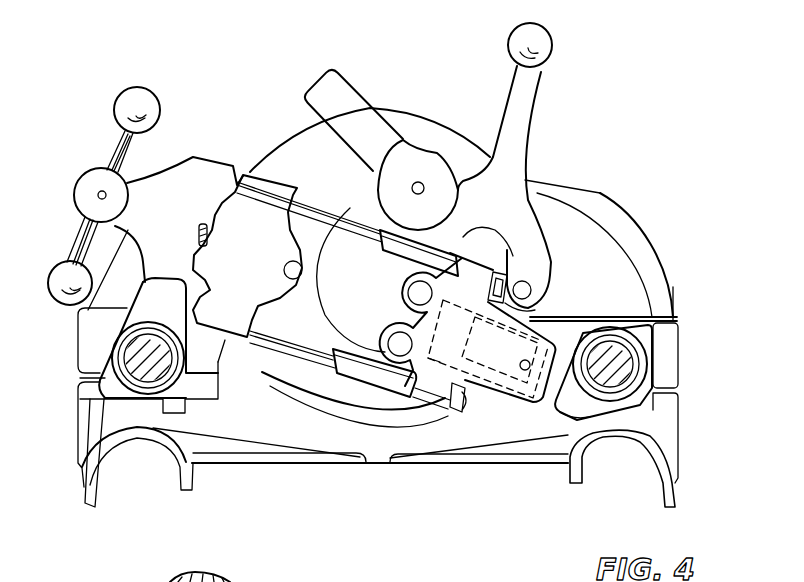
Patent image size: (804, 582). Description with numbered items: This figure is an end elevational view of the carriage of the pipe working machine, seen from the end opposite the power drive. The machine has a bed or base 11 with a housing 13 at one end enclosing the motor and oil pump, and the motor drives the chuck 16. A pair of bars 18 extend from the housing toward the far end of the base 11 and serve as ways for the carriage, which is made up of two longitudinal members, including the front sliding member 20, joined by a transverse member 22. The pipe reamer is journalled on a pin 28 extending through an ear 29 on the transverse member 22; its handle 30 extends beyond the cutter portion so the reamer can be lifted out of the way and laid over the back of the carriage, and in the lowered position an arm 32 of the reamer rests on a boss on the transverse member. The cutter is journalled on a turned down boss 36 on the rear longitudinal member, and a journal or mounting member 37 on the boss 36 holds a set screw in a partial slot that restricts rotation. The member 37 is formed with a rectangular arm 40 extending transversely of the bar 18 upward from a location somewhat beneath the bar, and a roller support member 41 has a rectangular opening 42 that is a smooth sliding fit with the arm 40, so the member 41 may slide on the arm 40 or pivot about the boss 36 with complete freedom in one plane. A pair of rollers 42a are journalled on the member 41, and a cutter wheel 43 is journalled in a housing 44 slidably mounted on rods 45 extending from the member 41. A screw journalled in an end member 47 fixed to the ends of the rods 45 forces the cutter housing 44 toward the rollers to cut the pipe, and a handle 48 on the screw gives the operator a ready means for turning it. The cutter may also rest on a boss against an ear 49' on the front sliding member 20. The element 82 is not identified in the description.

The bed or base 11 is at (648, 422).
The housing 13 is at (637, 240).
The chuck 16 is at (432, 125).
The bars 18 is at (128, 360).
The front sliding member 20 is at (138, 320).
The transverse member 22 is at (257, 360).
The pin 28 is at (530, 288).
The ear 29 is at (537, 308).
The handle 30 is at (523, 90).
The arm 32 is at (333, 80).
The turned down boss 36 is at (637, 352).
The journal or mounting member 37 is at (585, 410).
The rectangular arm 40 is at (543, 398).
The roller support member 41 is at (480, 362).
The rectangular opening 42 is at (383, 333).
The rollers 42a is at (437, 417).
The cutter wheel 43 is at (310, 272).
The housing 44 is at (268, 215).
The rods 45 is at (327, 207).
The end member 47 is at (183, 190).
The handle 48 is at (98, 183).
The ear 49' is at (53, 275).
The dome element 82 is at (187, 577).